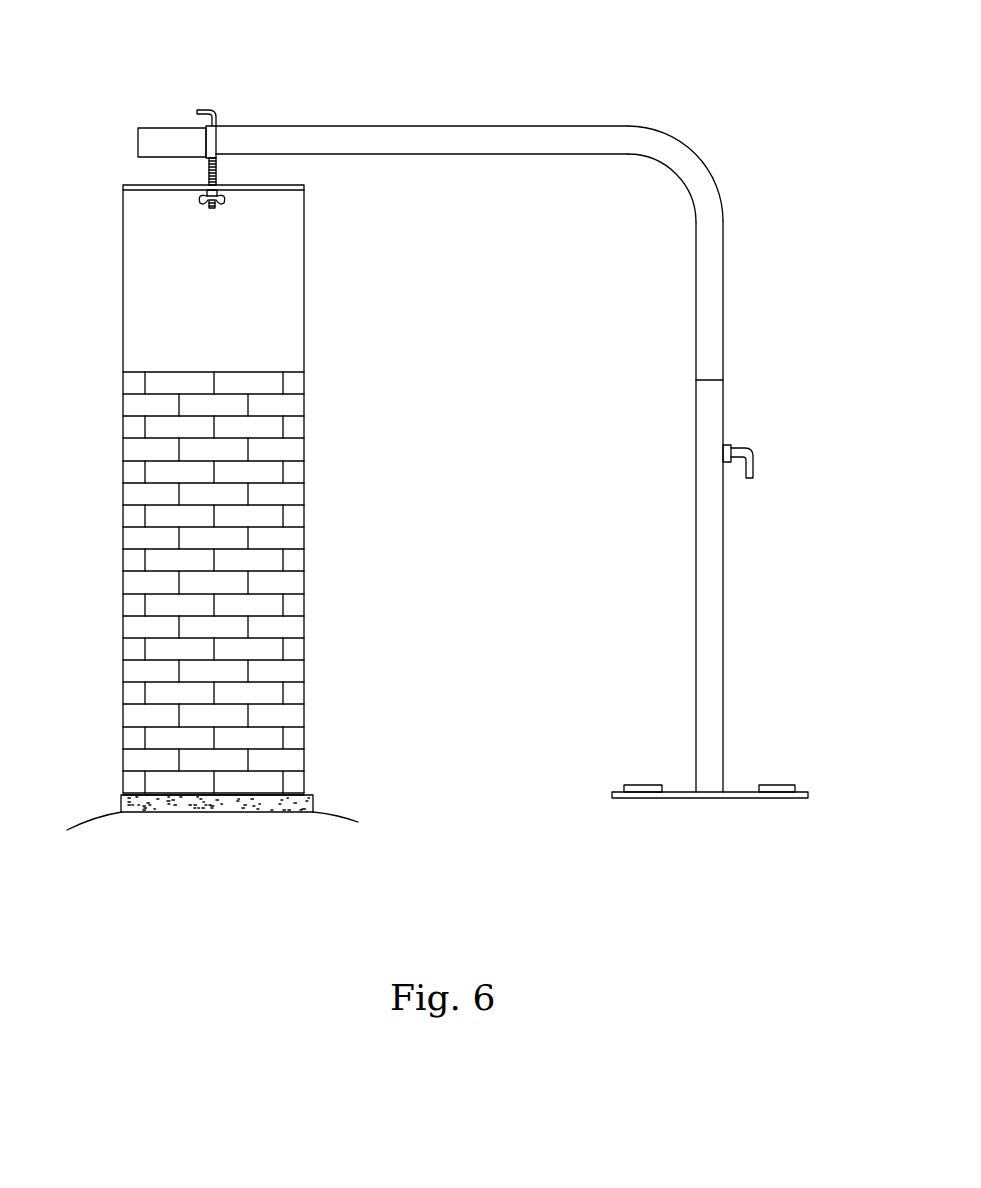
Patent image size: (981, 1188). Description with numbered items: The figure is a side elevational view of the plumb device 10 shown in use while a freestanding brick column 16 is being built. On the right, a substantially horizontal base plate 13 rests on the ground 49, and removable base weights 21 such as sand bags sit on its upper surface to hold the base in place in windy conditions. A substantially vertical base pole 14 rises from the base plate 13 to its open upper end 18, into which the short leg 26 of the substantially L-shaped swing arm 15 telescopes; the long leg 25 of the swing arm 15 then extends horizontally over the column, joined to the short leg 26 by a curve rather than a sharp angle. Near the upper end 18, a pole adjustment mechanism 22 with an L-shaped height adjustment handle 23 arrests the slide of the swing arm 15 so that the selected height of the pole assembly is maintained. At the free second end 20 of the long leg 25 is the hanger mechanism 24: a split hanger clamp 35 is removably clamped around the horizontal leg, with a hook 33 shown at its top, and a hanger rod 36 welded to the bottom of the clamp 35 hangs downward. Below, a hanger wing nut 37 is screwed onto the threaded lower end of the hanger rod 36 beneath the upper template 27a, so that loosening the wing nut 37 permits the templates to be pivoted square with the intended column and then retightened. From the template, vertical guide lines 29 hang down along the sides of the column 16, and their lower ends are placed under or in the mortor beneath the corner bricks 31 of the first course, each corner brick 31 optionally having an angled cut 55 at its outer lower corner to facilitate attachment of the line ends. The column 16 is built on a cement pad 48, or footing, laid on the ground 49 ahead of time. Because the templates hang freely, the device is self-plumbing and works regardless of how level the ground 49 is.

The plumb device 10 is at (748, 140).
The base plate 13 is at (687, 797).
The base pole 14 is at (696, 667).
The swing arm 15 is at (503, 118).
The brick column 16 is at (108, 538).
The upper end of base pole 18 is at (723, 380).
The second end of swing arm 20 is at (138, 141).
The base weights 21 is at (635, 785).
The pole adjustment mechanism 22 is at (762, 428).
The height adjustment handle 23 is at (757, 470).
The hanger mechanism 24 is at (247, 122).
The long leg of swing arm 25 is at (462, 126).
The short leg of swing arm 26 is at (694, 268).
The top plate 27a is at (145, 186).
The guide lines 29 is at (123, 280).
The corner bricks 31 is at (140, 788).
The hook 33 is at (197, 114).
The split hanger clamp 35 is at (212, 143).
The hanger rod 36 is at (218, 178).
The hanger wing nut 37 is at (224, 198).
The cement pad 48 is at (307, 803).
The ground 49 is at (99, 858).
The angled cut 55 is at (307, 793).